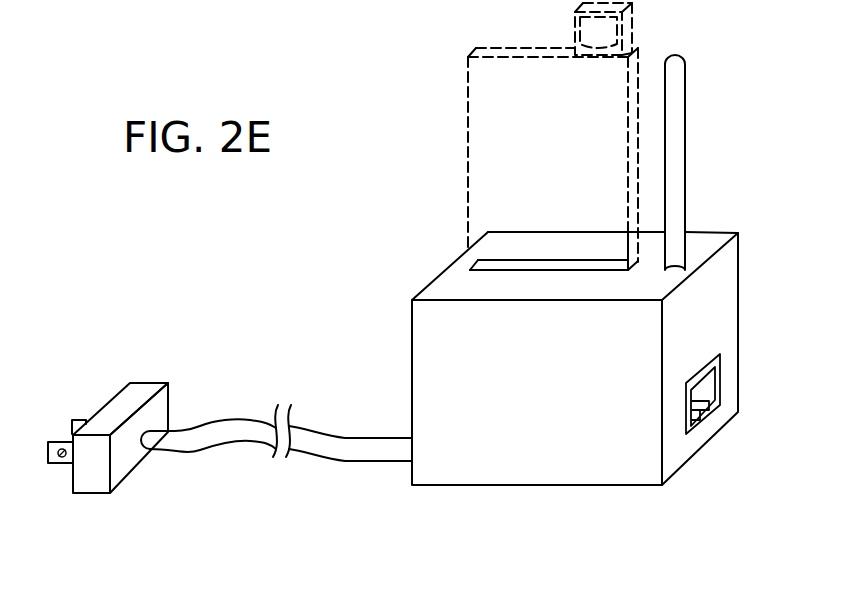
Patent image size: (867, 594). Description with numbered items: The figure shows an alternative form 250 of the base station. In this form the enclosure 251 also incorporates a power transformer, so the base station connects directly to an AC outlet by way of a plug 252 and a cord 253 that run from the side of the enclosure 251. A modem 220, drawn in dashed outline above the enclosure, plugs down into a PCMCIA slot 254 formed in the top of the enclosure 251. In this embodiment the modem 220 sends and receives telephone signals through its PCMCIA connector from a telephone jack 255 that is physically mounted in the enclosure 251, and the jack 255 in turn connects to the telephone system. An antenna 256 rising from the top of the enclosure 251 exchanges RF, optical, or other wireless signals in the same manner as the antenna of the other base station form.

The modem 220 is at (467, 111).
The alternative form of the base station 250 is at (357, 276).
The enclosure 251 is at (710, 242).
The plug 252 is at (157, 383).
The cord 253 is at (344, 436).
The PCMCIA slot 254 is at (516, 268).
The telephone jack 255 is at (722, 382).
The antenna 256 is at (686, 103).